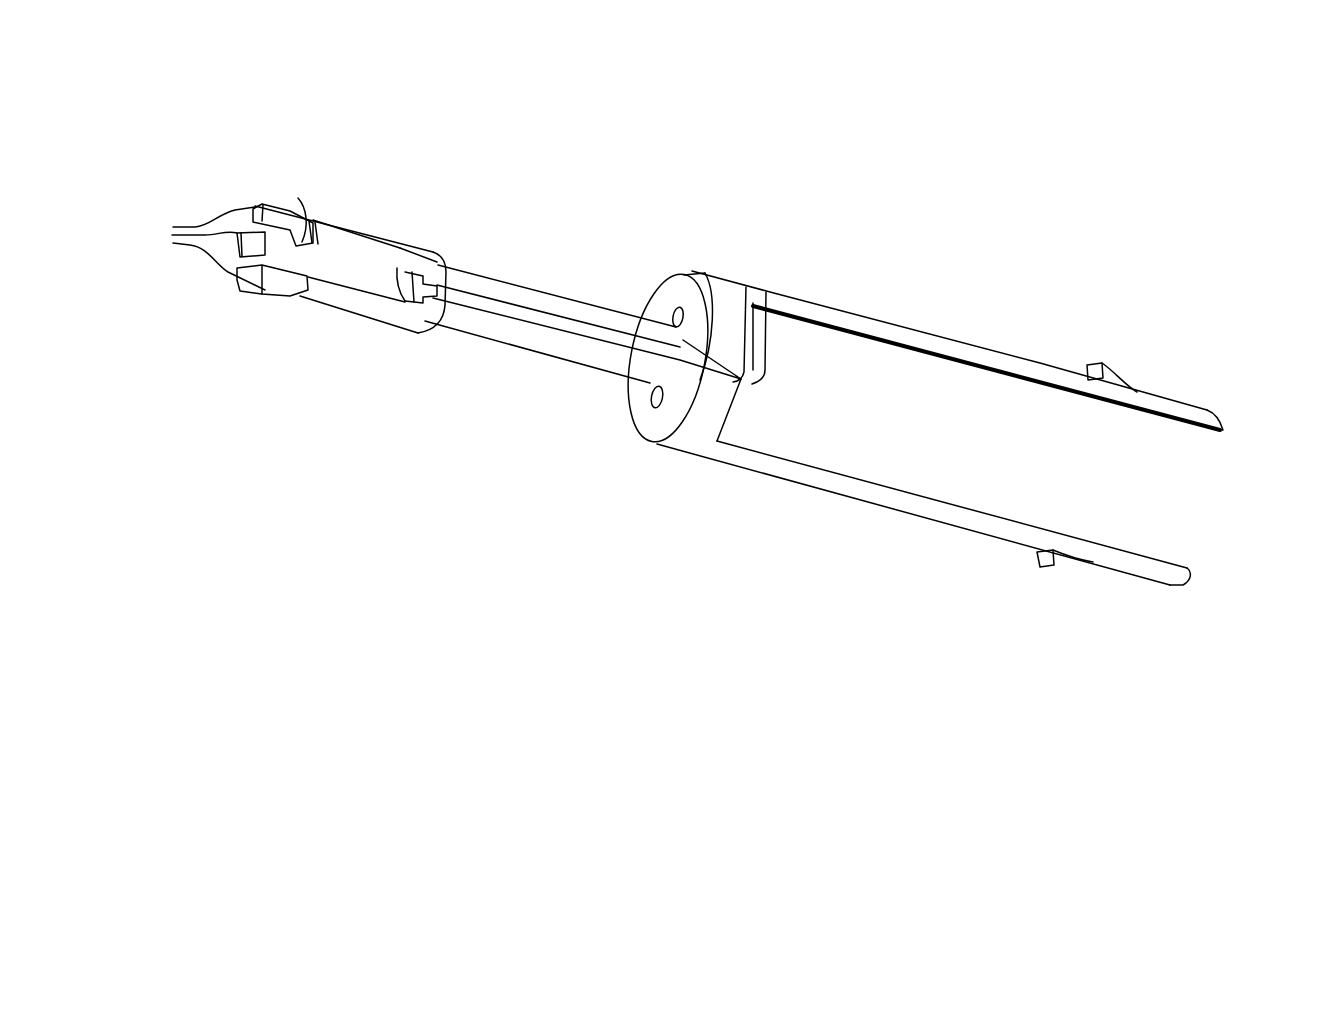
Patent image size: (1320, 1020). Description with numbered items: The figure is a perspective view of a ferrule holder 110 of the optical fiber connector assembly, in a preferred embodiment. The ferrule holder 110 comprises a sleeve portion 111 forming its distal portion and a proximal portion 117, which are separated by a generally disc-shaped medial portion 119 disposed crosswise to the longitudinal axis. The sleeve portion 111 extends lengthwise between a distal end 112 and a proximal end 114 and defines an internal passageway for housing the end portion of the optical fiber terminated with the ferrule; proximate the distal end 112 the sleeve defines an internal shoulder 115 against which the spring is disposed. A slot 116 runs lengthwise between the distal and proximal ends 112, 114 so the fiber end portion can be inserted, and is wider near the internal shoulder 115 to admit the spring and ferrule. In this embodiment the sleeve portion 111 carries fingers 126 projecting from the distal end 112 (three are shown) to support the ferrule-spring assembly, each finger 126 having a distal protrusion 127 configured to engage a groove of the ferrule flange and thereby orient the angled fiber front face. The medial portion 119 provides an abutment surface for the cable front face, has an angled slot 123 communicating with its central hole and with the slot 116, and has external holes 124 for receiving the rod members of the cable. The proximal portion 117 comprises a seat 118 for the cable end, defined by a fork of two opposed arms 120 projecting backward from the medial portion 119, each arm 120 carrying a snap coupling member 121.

The ferrule holder 110 is at (981, 123).
The sleeve portion 111 is at (484, 362).
The distal end 112 is at (358, 305).
The proximal end 114 is at (655, 336).
The internal shoulder 115 is at (397, 268).
The slot 116 is at (524, 308).
The proximal portion 117 is at (981, 321).
The seat 118 is at (1028, 462).
The medial portion 119 is at (703, 413).
The opposed arms 120 is at (1182, 410).
The snap coupling member 121 is at (1096, 366).
The slot 123 is at (746, 287).
The external holes 124 is at (679, 310).
The finger 126 is at (300, 214).
The protrusion 127 is at (181, 233).